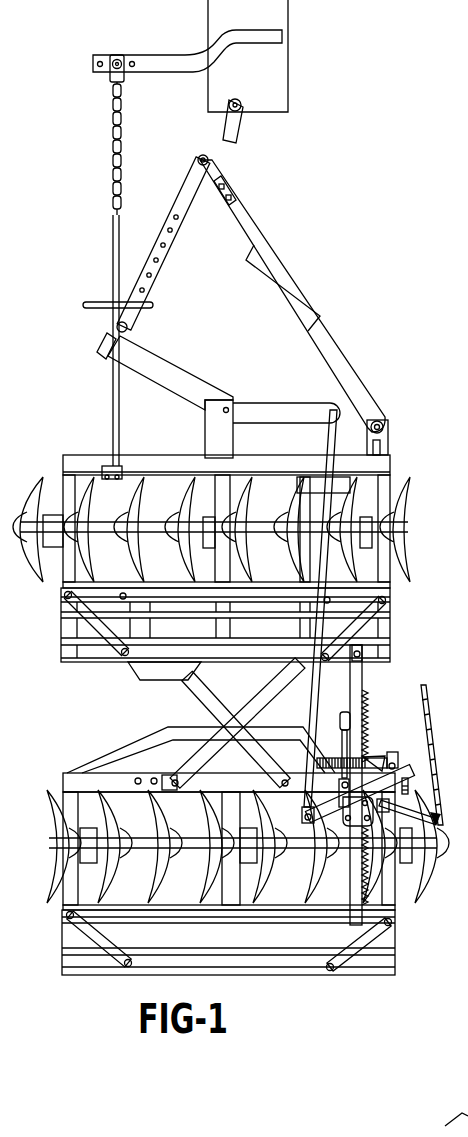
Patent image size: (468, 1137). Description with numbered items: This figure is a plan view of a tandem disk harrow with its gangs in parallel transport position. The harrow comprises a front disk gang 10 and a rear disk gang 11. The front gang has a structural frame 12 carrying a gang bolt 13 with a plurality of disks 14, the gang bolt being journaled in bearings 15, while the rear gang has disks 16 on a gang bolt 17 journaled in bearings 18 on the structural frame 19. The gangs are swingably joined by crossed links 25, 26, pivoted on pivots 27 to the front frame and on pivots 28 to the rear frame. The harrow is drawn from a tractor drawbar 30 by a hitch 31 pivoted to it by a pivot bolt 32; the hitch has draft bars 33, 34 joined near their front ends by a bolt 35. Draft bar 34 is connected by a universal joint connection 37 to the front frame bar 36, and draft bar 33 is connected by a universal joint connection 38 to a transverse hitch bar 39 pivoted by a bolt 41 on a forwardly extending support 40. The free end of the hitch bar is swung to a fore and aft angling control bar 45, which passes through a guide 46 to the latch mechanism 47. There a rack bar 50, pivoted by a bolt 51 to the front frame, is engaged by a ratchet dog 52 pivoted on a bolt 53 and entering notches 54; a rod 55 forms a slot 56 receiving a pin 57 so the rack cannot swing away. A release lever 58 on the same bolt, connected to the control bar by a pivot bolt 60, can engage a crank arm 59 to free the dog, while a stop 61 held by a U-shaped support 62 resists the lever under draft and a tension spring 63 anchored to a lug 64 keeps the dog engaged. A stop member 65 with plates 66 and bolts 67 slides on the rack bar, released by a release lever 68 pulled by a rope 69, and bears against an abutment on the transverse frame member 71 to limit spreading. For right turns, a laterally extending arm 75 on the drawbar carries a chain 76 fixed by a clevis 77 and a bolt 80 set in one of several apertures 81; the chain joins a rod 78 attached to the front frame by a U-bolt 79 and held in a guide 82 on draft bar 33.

The front disk gang 10 is at (403, 468).
The rear disk gang 11 is at (401, 935).
The structural frame 12 is at (384, 615).
The gang bolt 13 is at (108, 525).
The disks 14 is at (298, 492).
The bearings 15 is at (49, 515).
The disks 16 is at (205, 878).
The gang bolt 17 is at (137, 848).
The bearings 18 is at (95, 840).
The structural frame 19 is at (73, 780).
The crossed link 25 is at (210, 697).
The crossed link 26 is at (252, 692).
The pivots 27 is at (123, 593).
The pivots 28 is at (176, 788).
The drawbar 30 is at (280, 82).
The hitch 31 is at (264, 208).
The pivot bolt 32 is at (241, 108).
The draft bar 33 is at (173, 242).
The draft bar 34 is at (293, 283).
The bolt 35 is at (198, 160).
The front frame bar 36 is at (278, 460).
The universal joint connection 37 is at (391, 432).
The universal joint connection 38 is at (135, 336).
The transverse hitch bar 39 is at (176, 383).
The forwardly extending support 40 is at (205, 438).
The bolt 41 is at (228, 410).
The angling control bar 45 is at (331, 428).
The guide 46 is at (337, 482).
The latch mechanism 47 is at (414, 740).
The rack bar 50 is at (353, 694).
The bolt 51 is at (360, 655).
The ratchet dog 52 is at (392, 762).
The bolt 53 is at (409, 791).
The notches 54 is at (366, 700).
The rod 55 is at (343, 731).
The slot 56 is at (346, 749).
The pin 57 is at (342, 783).
The release lever 58 is at (405, 770).
The crank arm 59 is at (408, 781).
The pivot bolt 60 is at (307, 819).
The stop 61 is at (417, 768).
The U-shaped support 62 is at (393, 752).
The tension spring 63 is at (372, 757).
The lug 64 is at (316, 757).
The stop member 65 is at (405, 811).
The plates 66 is at (356, 872).
The bolts 67 is at (407, 819).
The release lever 68 is at (433, 824).
The rope 69 is at (424, 698).
The transverse frame member 71 is at (225, 770).
The laterally extending arm 75 is at (154, 62).
The chain 76 is at (113, 154).
The clevis 77 is at (110, 76).
The rod 78 is at (113, 249).
The U-bolt 79 is at (108, 466).
The bolt 80 is at (117, 59).
The apertures 81 is at (100, 61).
The guide 82 is at (97, 303).